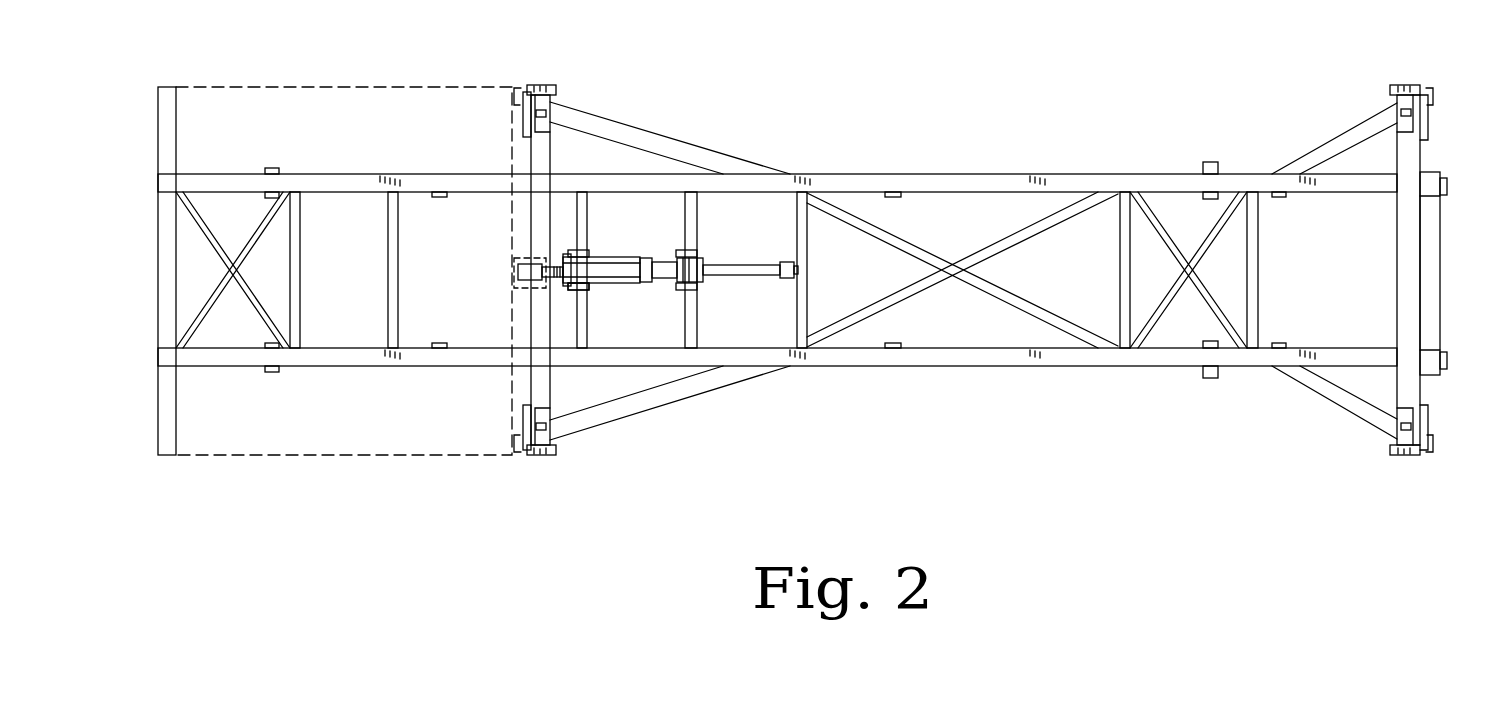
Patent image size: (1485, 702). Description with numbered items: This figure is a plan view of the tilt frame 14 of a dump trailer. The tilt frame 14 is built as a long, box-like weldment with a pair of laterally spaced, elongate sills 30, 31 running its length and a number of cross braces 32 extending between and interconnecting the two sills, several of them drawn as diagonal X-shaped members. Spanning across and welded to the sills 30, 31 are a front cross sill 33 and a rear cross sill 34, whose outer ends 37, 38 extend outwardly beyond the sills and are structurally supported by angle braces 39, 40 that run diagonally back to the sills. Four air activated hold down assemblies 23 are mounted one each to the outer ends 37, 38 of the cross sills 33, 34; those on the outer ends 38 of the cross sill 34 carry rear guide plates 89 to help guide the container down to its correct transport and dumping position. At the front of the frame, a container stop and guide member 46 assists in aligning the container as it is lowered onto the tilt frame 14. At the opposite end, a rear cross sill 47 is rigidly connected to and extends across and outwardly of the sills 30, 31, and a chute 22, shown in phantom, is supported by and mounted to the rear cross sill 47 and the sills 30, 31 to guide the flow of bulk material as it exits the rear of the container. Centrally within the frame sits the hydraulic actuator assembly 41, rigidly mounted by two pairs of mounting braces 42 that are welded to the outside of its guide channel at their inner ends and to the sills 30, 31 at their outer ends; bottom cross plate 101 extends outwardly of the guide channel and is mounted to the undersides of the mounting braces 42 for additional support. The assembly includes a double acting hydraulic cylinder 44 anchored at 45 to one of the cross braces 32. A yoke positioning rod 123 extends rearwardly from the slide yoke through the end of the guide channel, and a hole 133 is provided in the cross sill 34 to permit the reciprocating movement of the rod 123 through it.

The tilt frame 14 is at (912, 415).
The chute 22 is at (258, 458).
The air activated hold down assembly 23 is at (544, 85).
The sill 30 is at (980, 172).
The sill 31 is at (1015, 368).
The cross brace 32 is at (248, 242).
The front cross sill 33 is at (1398, 252).
The rear cross sill 34 is at (530, 206).
The outer end of cross sill 33 37 is at (1418, 125).
The outer end of cross sill 34 38 is at (538, 120).
The angle brace 39 is at (1318, 143).
The angle brace 40 is at (668, 152).
The hydraulic actuator assembly 41 is at (625, 256).
The mounting brace 42 is at (590, 206).
The double acting hydraulic cylinder 44 is at (740, 275).
The anchor point 45 is at (786, 278).
The container stop and guide member 46 is at (1441, 220).
The rear cross sill 47 is at (178, 118).
The rear guide plate 89 is at (524, 135).
The bottom cross plate 101 is at (588, 290).
The yoke positioning rod 123 is at (535, 265).
The hole 133 is at (552, 270).